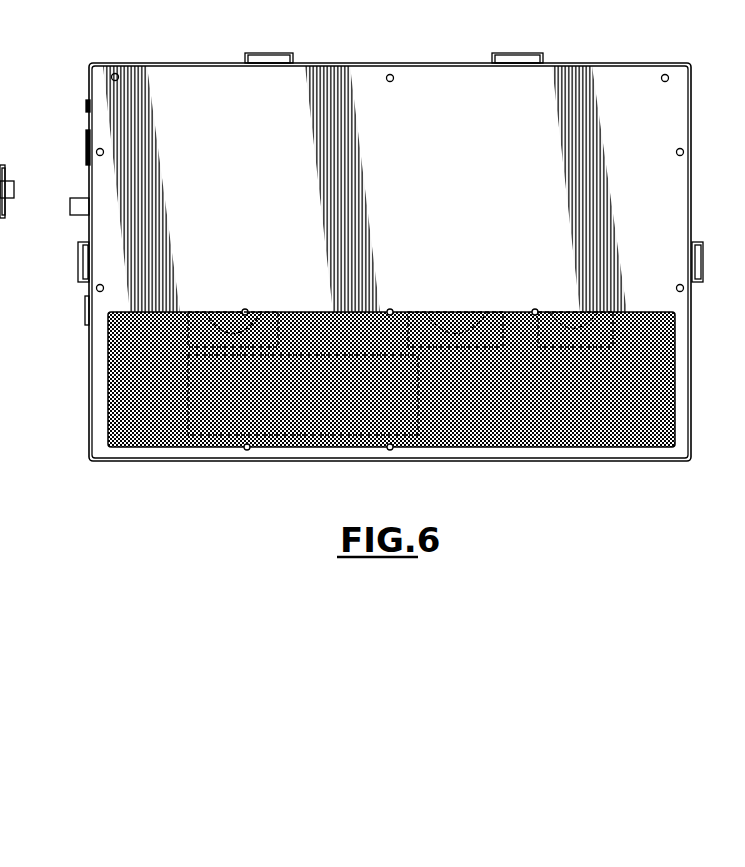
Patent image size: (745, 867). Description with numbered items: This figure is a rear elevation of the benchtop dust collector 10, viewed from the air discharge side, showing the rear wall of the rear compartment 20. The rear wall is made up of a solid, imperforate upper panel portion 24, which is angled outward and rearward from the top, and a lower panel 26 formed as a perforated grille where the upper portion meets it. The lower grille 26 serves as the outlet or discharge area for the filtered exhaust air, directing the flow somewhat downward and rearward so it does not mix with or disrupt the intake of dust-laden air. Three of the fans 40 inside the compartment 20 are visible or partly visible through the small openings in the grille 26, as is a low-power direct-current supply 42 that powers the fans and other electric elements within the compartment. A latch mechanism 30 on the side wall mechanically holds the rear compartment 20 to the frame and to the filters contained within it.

The benchtop dust collector 10 is at (632, 35).
The rear compartment 20 is at (665, 122).
The upper panel portion 24 is at (637, 215).
The lower panel 26 is at (590, 425).
The latch mechanism 30 is at (63, 146).
The fans 40 is at (230, 340).
The low-power direct-current supply 42 is at (298, 440).